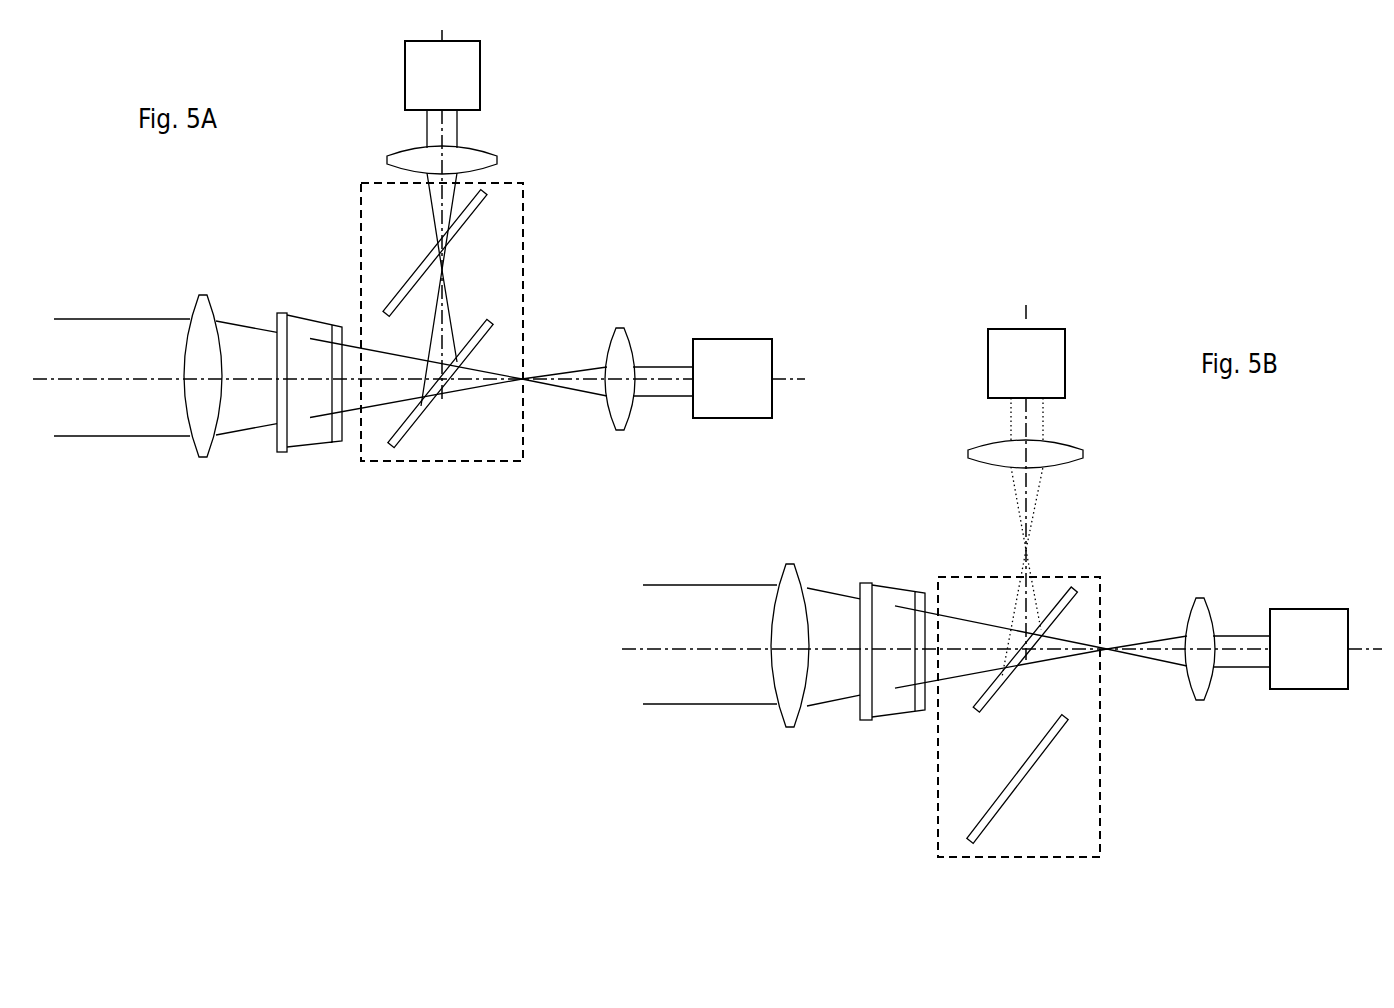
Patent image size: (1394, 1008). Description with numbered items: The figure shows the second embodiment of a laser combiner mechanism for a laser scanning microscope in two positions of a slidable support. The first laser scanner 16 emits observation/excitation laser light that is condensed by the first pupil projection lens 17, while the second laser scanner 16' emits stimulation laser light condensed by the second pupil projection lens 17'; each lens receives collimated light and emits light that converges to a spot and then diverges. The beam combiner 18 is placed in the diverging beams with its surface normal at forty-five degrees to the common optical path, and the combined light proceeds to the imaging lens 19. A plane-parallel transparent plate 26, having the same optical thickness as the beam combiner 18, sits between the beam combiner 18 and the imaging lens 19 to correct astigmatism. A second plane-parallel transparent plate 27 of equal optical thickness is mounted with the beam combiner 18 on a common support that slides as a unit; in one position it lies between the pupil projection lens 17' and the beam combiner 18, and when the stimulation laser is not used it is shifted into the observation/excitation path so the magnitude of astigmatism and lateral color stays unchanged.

In FIG. 5A, the first laser scanner 16 is at (732, 422).
In FIG. 5B, the first laser scanner 16 is at (1309, 693).
In FIG. 5A, the second laser scanner 16' is at (487, 75).
In FIG. 5B, the second laser scanner 16' is at (1073, 354).
In FIG. 5A, the first pupil projection lens 17 is at (623, 425).
In FIG. 5B, the first pupil projection lens 17 is at (1201, 697).
In FIG. 5A, the second pupil projection lens 17' is at (484, 145).
In FIG. 5B, the second pupil projection lens 17' is at (1067, 437).
In FIG. 5A, the beam combiner 18 is at (418, 440).
In FIG. 5B, the beam combiner 18 is at (1020, 790).
In FIG. 5A, the imaging lens 19 is at (205, 458).
In FIG. 5B, the imaging lens 19 is at (790, 732).
In FIG. 5A, the plane-parallel transparent plate 26 is at (293, 448).
In FIG. 5B, the plane-parallel transparent plate 26 is at (875, 722).
In FIG. 5A, the plane-parallel transparent plate 27 is at (477, 212).
In FIG. 5B, the plane-parallel transparent plate 27 is at (1072, 605).